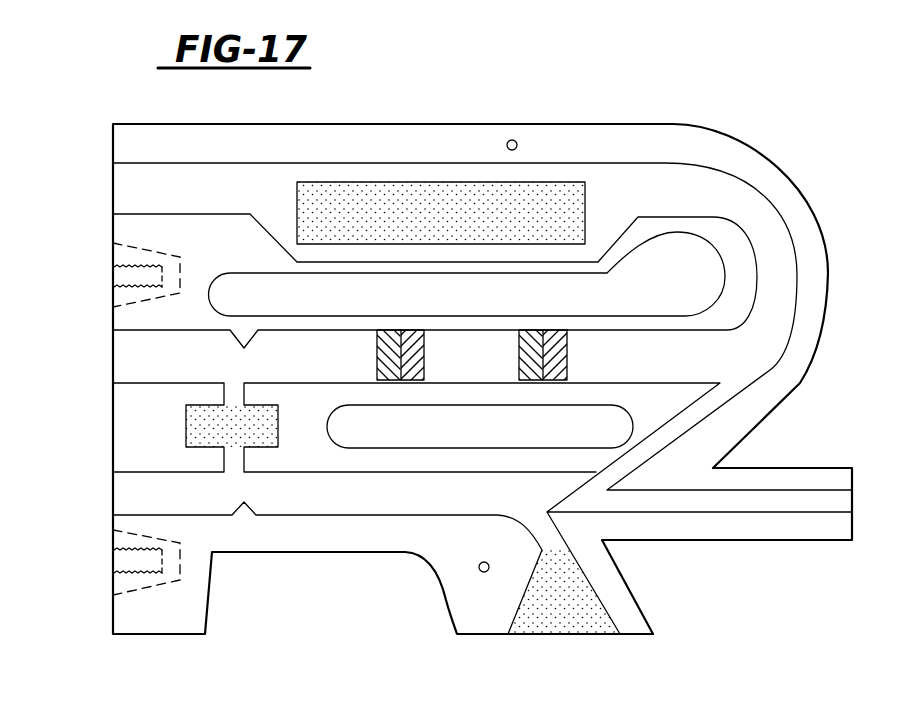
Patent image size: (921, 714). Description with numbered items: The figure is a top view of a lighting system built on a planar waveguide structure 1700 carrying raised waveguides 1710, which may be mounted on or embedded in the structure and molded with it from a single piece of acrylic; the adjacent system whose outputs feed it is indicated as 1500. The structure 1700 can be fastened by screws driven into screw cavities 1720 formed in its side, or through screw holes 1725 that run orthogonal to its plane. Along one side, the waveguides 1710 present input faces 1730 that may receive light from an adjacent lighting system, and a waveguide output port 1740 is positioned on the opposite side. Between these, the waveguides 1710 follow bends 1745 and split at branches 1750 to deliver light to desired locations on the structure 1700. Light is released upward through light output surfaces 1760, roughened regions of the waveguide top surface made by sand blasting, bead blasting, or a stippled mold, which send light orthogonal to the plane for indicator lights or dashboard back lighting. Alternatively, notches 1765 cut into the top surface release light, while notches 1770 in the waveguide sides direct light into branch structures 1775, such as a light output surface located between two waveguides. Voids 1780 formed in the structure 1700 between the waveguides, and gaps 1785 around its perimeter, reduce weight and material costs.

The substrate 1500 is at (25, 377).
The planar waveguide structure 1700 is at (618, 150).
The waveguides 1710 is at (207, 180).
The screw cavities 1720 is at (113, 275).
The screw holes 1725 is at (512, 140).
The input faces 1730 is at (113, 190).
The waveguide output port 1740 is at (853, 505).
The bends 1745 is at (772, 250).
The branches 1750 is at (603, 498).
The light output surfaces 1760 is at (370, 195).
The notches 1765 is at (400, 335).
The notches 1770 is at (245, 340).
The branch structures 1775 is at (225, 455).
The voids 1780 is at (685, 250).
The gaps 1785 is at (787, 425).